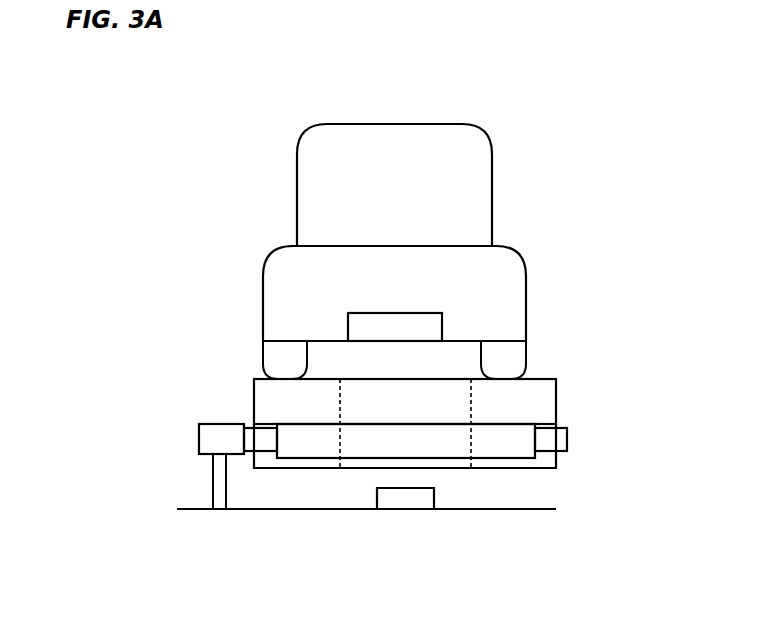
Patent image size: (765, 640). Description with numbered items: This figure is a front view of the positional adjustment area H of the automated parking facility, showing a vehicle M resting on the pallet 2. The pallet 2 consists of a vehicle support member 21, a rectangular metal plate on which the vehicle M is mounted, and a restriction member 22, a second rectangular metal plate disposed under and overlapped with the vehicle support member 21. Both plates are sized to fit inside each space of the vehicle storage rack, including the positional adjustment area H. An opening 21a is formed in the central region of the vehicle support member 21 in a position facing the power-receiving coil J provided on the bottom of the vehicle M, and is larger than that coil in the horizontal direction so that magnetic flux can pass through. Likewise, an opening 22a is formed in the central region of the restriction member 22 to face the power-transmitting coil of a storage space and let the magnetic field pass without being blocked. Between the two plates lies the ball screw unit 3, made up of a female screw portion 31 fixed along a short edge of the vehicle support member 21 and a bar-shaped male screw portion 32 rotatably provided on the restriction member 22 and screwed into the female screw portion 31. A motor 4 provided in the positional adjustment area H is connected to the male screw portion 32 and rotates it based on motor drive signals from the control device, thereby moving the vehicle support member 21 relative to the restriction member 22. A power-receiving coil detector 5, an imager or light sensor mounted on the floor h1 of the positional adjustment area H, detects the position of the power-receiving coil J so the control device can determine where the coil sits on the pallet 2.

The vehicle M is at (378, 124).
The power-receiving coil J is at (348, 321).
The pallet 2 is at (412, 431).
The vehicle support member 21 is at (540, 378).
The opening 21a is at (341, 398).
The restriction member 22 is at (491, 469).
The opening 22a is at (340, 452).
The ball screw unit 3 is at (459, 477).
The female screw portion 31 is at (518, 452).
The male screw portion 32 is at (558, 432).
The motor 4 is at (216, 424).
The power-receiving coil detector 5 is at (434, 497).
The positional adjustment area H is at (185, 492).
The floor h1 is at (248, 509).